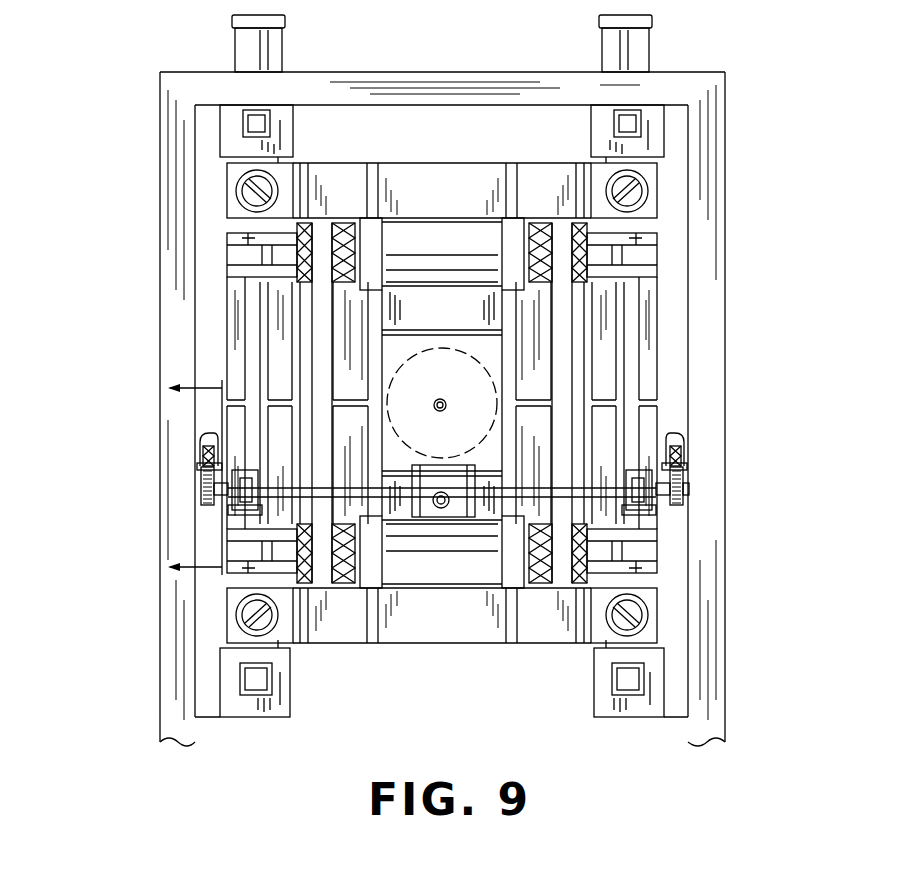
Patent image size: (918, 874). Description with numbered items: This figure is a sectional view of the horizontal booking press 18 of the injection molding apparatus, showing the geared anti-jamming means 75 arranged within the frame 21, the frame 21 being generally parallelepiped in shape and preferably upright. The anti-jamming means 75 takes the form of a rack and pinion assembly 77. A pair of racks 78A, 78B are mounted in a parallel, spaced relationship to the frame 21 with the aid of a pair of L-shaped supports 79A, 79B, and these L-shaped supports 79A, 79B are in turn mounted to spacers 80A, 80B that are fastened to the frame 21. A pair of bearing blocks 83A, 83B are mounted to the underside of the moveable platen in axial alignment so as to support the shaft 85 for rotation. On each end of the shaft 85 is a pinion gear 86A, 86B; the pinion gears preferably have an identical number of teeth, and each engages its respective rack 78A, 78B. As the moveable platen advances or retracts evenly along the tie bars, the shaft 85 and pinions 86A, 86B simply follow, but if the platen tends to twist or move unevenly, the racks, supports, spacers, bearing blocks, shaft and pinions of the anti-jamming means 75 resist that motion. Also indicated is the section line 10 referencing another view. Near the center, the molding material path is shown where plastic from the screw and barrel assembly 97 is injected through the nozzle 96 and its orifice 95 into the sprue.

The horizontal booking press 18 is at (772, 212).
The frame 21 is at (160, 232).
The section line 10 is at (192, 481).
The anti-jamming means 75 is at (194, 496).
The rack and pinion assembly 77 is at (705, 478).
The rack 78A is at (203, 480).
The rack 78B is at (681, 478).
The L-shaped support 79A is at (203, 437).
The L-shaped support 79B is at (681, 437).
The spacer 80A is at (199, 452).
The spacer 80B is at (685, 455).
The bearing block 83A is at (235, 510).
The bearing block 83B is at (649, 515).
The shaft 85 is at (498, 493).
The pinion gear 86A is at (230, 500).
The pinion gear 86B is at (654, 505).
The orifice 95 is at (448, 408).
The nozzle 96 is at (444, 400).
The screw and barrel assembly 97 is at (490, 345).